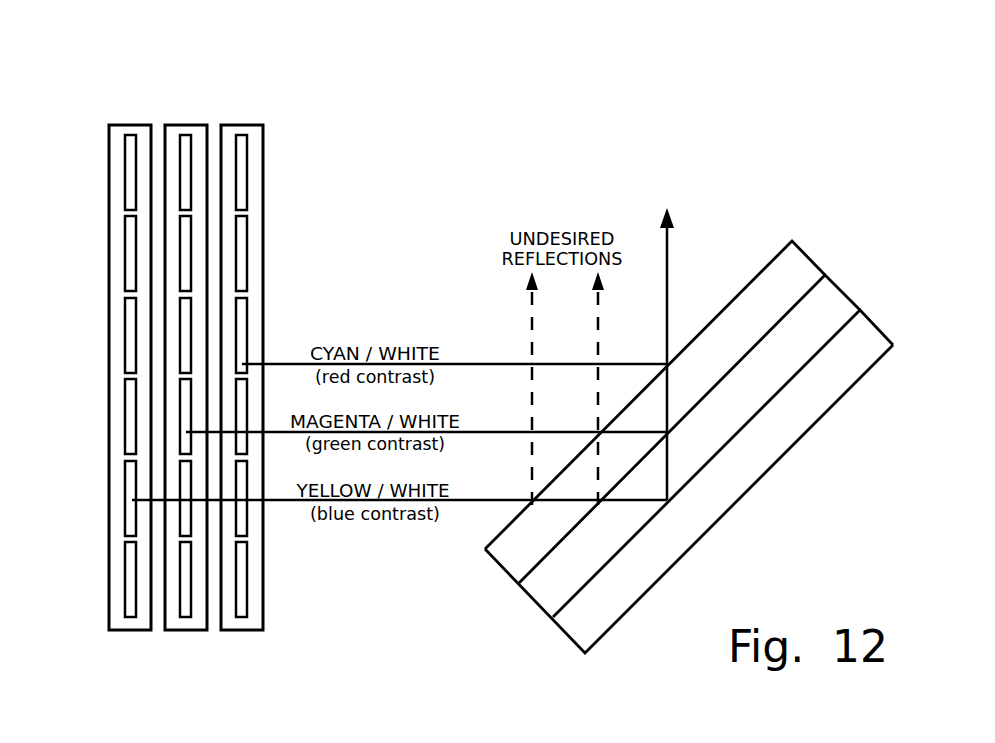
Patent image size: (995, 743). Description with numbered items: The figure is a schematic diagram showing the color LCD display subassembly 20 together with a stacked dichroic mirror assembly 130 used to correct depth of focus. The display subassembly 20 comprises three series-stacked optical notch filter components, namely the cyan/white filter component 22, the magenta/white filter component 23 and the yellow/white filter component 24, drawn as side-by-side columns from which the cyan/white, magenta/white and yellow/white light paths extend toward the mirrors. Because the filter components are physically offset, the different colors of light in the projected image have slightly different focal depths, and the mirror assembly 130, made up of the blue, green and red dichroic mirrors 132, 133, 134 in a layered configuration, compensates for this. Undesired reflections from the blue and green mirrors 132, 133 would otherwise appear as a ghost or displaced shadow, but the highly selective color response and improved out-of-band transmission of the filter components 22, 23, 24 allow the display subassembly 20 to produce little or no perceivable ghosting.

The display subassembly 20 is at (92, 90).
The cyan/white filter component 22 is at (260, 124).
The magenta/white filter component 23 is at (200, 124).
The yellow/white filter component 24 is at (140, 124).
The stacked dichroic mirror assembly 130 is at (743, 512).
The blue dichroic mirror 132 is at (777, 250).
The green dichroic mirror 133 is at (807, 292).
The red dichroic mirror 134 is at (842, 323).